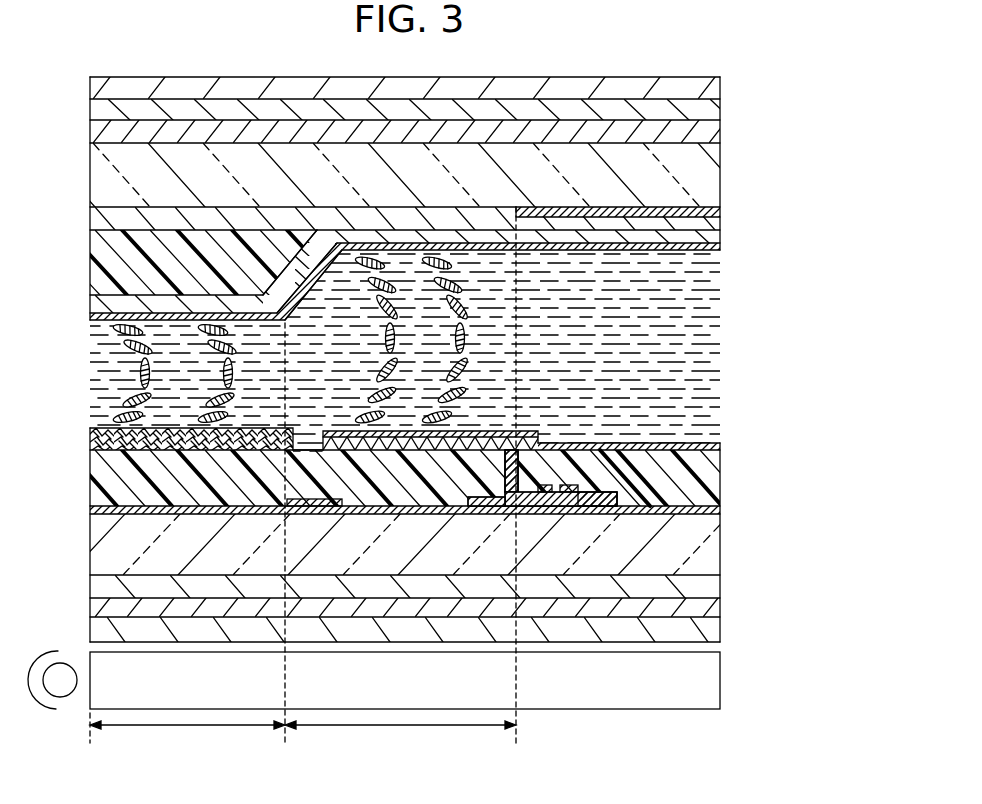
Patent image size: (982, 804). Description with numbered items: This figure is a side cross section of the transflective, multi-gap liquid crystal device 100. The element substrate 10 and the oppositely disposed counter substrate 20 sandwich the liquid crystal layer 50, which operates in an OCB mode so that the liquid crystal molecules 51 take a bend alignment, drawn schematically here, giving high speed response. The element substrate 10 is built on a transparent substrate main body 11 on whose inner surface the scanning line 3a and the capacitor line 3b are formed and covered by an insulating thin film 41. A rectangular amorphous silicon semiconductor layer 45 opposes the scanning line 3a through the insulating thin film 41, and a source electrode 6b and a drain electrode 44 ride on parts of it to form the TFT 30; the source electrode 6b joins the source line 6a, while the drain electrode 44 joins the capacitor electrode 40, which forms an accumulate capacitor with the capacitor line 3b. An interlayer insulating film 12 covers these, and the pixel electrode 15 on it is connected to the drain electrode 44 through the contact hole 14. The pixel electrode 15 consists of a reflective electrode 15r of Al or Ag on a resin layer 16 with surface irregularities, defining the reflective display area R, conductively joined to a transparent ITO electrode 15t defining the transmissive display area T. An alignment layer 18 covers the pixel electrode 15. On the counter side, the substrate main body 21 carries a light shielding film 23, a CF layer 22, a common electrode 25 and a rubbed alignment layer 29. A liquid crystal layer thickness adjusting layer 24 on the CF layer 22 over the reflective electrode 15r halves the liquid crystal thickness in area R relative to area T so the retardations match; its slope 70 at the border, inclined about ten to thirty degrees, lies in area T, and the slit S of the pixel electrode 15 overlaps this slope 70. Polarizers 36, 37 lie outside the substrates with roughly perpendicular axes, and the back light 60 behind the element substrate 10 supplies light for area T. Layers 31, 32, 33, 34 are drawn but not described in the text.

The liquid crystal device 100 is at (665, 50).
The element substrate 10 is at (86, 443).
The counter substrate 20 is at (84, 78).
The substrate main body 11 is at (708, 545).
The interlayer insulating film 12 is at (708, 480).
The contact hole 14 is at (500, 430).
The pixel electrode 15 is at (408, 420).
The transparent electrode 15t is at (343, 430).
The reflective electrode 15r is at (168, 428).
The resin layer 16 is at (110, 430).
The alignment layer 18 is at (720, 444).
The substrate main body 21 is at (705, 171).
The CF layer 22 is at (712, 223).
The light shielding film 23 is at (712, 212).
The liquid crystal layer thickness adjusting layer 24 is at (163, 287).
The common electrode 25 is at (708, 238).
The alignment layer 29 is at (705, 251).
The TFT 30 is at (560, 452).
The scanning line 3a is at (575, 515).
The capacitor line 3b is at (484, 515).
The source line 6a is at (320, 497).
The source electrode 6b is at (620, 470).
The retardation film 31 is at (705, 587).
The retardation film 32 is at (710, 130).
The retardation film 33 is at (712, 608).
The retardation film 34 is at (710, 114).
The polarizer 36 is at (712, 630).
The polarizer 37 is at (710, 86).
The capacitor electrode 40 is at (473, 471).
The insulating thin film 41 is at (708, 509).
The drain electrode 44 is at (497, 488).
The semiconductor layer 45 is at (557, 465).
The liquid crystal layer 50 is at (720, 343).
The liquid crystal molecules 51 is at (450, 278).
The back light 60 is at (708, 683).
The slope 70 is at (320, 292).
The slit S is at (320, 440).
The reflective display area R is at (187, 540).
The transmissive display area T is at (400, 482).